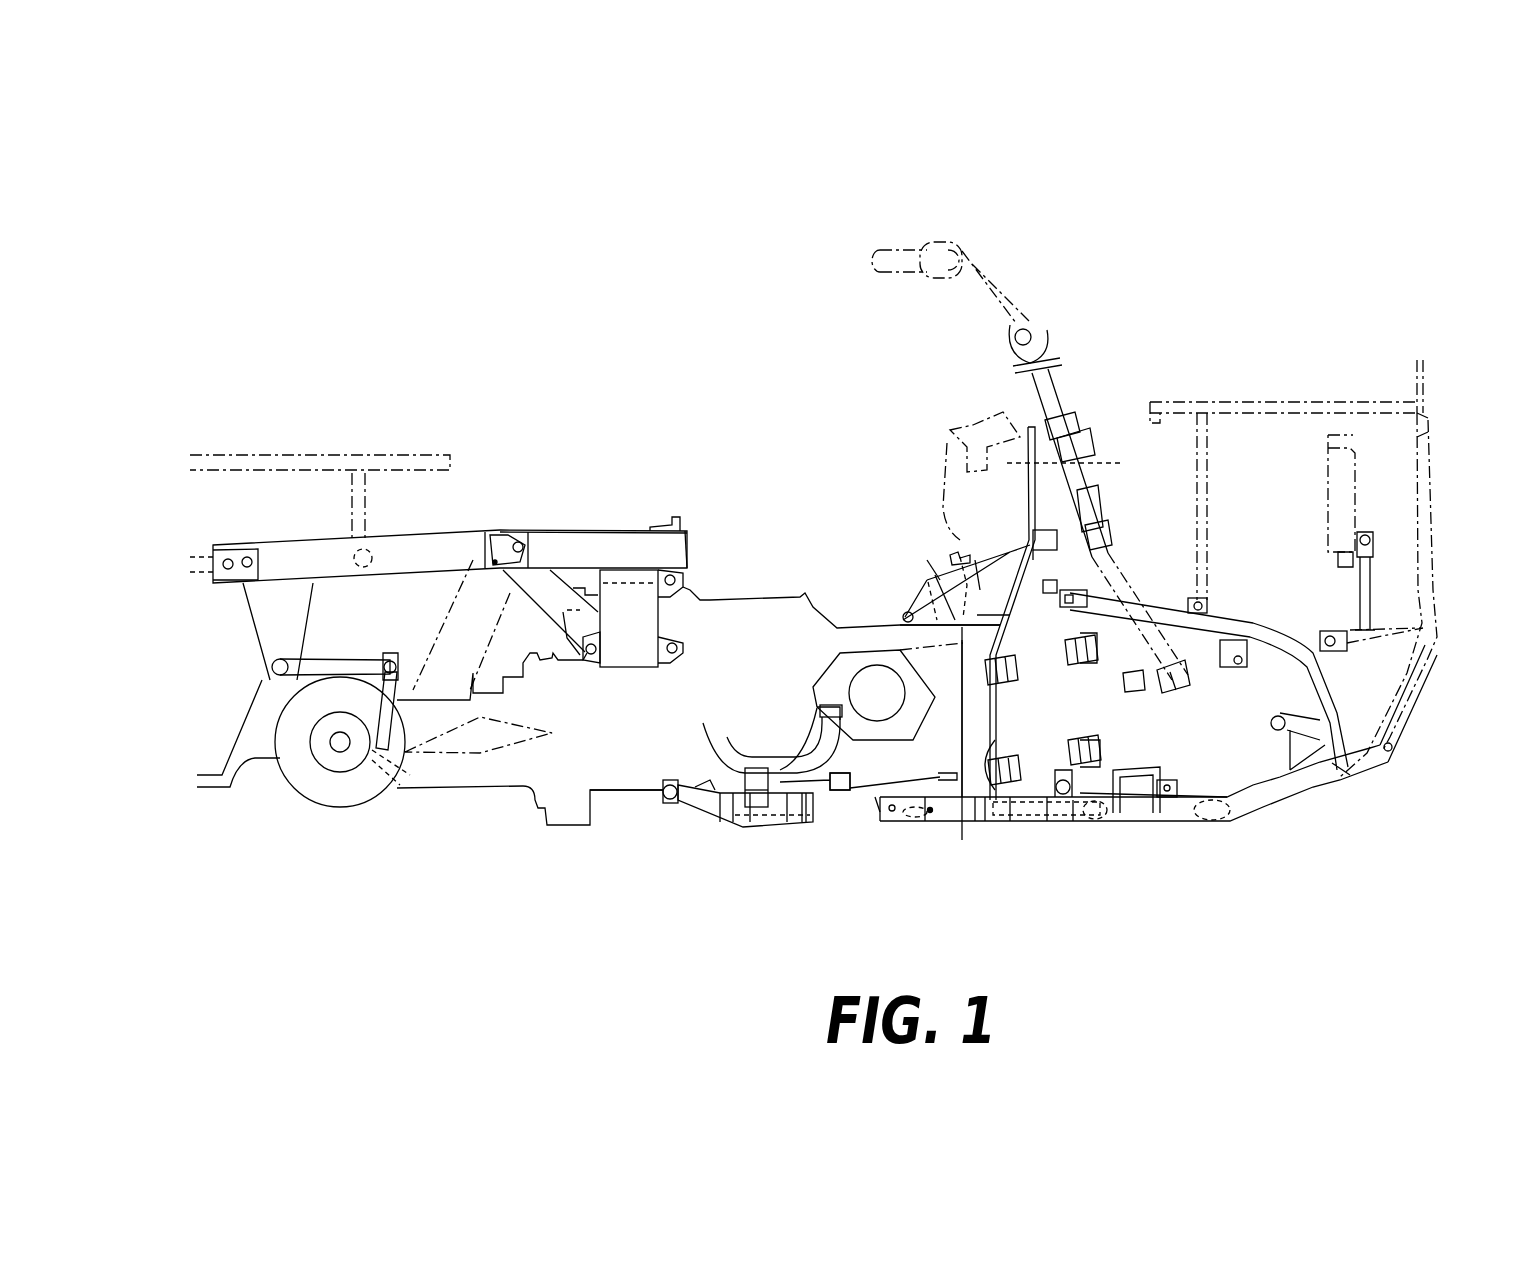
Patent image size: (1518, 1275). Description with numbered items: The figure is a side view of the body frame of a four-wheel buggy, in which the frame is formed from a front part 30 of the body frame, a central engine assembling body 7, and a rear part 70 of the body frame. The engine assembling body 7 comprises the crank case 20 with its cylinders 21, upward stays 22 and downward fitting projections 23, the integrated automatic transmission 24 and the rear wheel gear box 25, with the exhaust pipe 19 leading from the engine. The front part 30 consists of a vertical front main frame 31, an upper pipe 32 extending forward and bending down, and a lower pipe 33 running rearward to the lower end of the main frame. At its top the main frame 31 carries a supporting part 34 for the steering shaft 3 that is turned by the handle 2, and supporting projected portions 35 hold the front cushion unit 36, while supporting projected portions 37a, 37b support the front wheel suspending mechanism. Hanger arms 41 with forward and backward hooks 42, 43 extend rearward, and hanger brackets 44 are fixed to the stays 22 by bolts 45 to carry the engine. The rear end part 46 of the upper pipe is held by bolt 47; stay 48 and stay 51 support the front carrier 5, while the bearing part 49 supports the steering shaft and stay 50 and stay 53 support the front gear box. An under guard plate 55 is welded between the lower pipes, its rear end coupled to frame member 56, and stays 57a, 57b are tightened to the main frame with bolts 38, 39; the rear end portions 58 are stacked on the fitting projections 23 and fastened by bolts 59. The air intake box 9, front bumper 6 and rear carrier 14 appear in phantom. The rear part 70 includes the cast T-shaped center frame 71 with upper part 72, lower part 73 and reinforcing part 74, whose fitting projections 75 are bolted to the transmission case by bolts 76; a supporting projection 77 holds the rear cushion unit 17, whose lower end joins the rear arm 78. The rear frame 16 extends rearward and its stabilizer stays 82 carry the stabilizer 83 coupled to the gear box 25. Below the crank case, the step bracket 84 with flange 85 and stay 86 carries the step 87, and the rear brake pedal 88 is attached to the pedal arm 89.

The handle 2 is at (1013, 300).
The steering shaft 3 is at (1063, 383).
The front carrier 5 is at (1257, 400).
The front bumper 6 is at (1430, 485).
The engine assembling body 7 is at (717, 580).
The air intake box 9 is at (950, 440).
The rear carrier 14 is at (287, 455).
The rear frame 16 is at (443, 530).
The rear cushion unit 17 is at (447, 608).
The exhaust pipe 19 is at (730, 723).
The crank case 20 is at (950, 797).
The cylinders 21 is at (850, 632).
The stays 22 is at (900, 620).
The fitting projections 23 is at (937, 797).
The automatic transmission 24 is at (615, 750).
The rear wheel gear box 25 is at (343, 807).
The front part of the body frame 30 is at (1193, 843).
The front main frame 31 is at (1067, 443).
The upper pipe 32 is at (1247, 630).
The lower pipe 33 is at (1073, 823).
The supporting part 34 is at (1070, 423).
The supporting projected portions 35 is at (1093, 470).
The front cushion unit 36 is at (1140, 645).
The supporting projected portion 37a is at (1015, 680).
The supporting projected portion 37b is at (1047, 797).
The bolt 38 is at (1060, 797).
The bolt 39 is at (980, 797).
The hanger arms 41 is at (985, 535).
The forward hook 42 is at (1003, 543).
The backward hook 43 is at (947, 547).
The hanger bracket 44 is at (930, 558).
The bolt 45 is at (903, 558).
The rear end part of the upper pipe 46 is at (1120, 553).
The bolt 47 is at (1137, 547).
The stay 48 is at (1207, 597).
The bearing part 49 is at (1172, 690).
The stay 50 is at (1247, 670).
The stay 51 is at (1307, 627).
The stay 53 is at (1273, 713).
The under guard plate 55 is at (1240, 813).
The frame member 56 is at (1107, 820).
The stay 57a is at (1080, 773).
The stay 57b is at (995, 737).
The rear end portions of the lower pipes 58 is at (910, 823).
The bolts 59 is at (877, 813).
The rear part of the body frame 70 is at (585, 497).
The center frame 71 is at (690, 540).
The upper part 72 is at (547, 528).
The lower part 73 is at (630, 590).
The reinforcing part 74 is at (547, 593).
The fitting projections 75 is at (593, 665).
The bolts 76 is at (680, 577).
The supporting projection 77 is at (510, 530).
The rear arm 78 is at (477, 760).
The stabilizer stay 82 is at (250, 627).
The stabilizer 83 is at (290, 657).
The step bracket 84 is at (750, 815).
The flange 85 is at (778, 833).
The stay 86 is at (720, 820).
The step 87 is at (757, 767).
The rear brake pedal 88 is at (853, 780).
The pedal arm 89 is at (687, 810).